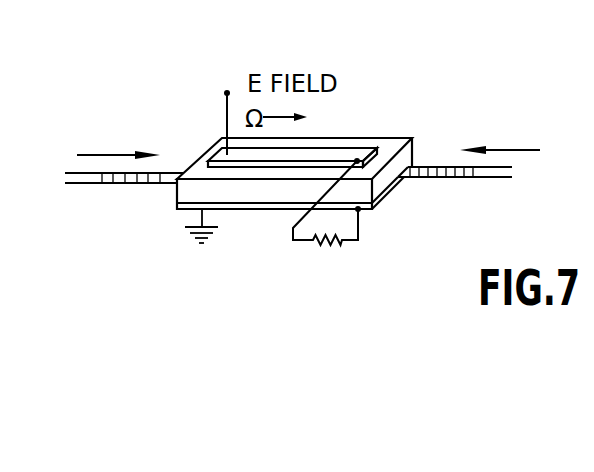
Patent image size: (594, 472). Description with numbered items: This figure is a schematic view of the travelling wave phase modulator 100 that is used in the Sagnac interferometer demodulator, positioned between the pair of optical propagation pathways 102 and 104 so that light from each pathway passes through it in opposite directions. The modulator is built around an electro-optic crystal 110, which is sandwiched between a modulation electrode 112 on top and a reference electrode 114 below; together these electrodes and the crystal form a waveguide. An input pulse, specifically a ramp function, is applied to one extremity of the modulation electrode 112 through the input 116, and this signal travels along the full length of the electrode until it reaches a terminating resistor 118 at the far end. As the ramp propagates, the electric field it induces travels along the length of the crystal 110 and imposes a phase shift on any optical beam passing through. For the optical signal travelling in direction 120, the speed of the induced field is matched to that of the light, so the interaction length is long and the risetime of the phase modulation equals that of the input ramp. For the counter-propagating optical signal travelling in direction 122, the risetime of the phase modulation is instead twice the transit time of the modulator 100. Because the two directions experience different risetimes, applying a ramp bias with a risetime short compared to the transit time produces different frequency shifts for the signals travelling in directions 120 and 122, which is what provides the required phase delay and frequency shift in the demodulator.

The travelling wave phase modulator 100 is at (433, 53).
The optical propagation pathway 102 is at (90, 187).
The optical propagation pathway 104 is at (460, 180).
The electro-optic crystal 110 is at (414, 141).
The modulation electrode 112 is at (303, 148).
The reference electrode 114 is at (283, 211).
The input 116 is at (223, 93).
The terminating resistor 118 is at (337, 245).
The optical signal direction 120 is at (92, 155).
The counter-propagating optical signal direction 122 is at (520, 143).